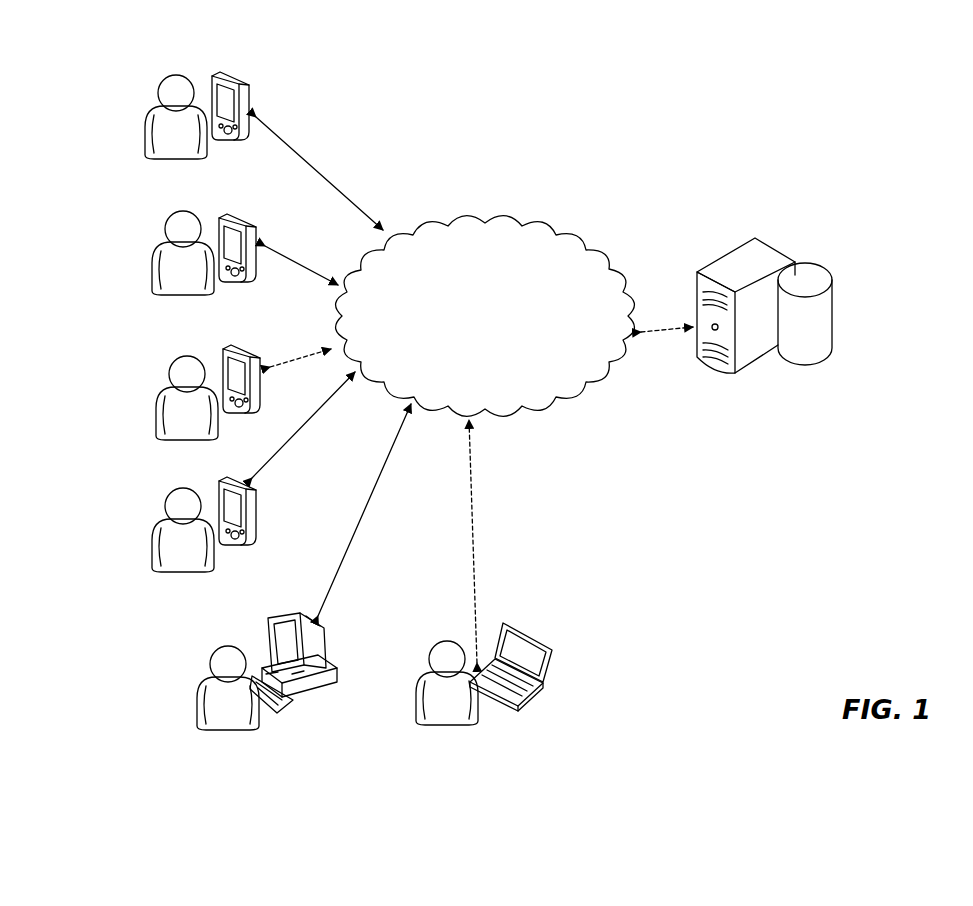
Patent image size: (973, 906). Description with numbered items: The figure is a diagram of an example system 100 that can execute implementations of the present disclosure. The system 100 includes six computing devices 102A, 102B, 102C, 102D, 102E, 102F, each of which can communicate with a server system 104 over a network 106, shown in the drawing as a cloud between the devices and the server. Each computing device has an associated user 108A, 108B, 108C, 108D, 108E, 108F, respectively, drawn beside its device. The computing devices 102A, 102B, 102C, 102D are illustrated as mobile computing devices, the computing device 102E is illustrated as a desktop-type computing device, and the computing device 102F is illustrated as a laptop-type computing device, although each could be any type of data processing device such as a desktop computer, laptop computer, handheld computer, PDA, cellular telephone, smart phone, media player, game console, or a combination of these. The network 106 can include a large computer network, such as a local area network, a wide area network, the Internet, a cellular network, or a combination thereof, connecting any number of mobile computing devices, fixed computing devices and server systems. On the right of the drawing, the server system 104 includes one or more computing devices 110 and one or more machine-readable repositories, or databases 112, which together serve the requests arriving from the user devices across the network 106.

The system 100 is at (631, 57).
The computing device 102A is at (241, 72).
The computing device 102B is at (248, 215).
The computing device 102C is at (246, 347).
The computing device 102D is at (262, 510).
The computing device 102E is at (332, 655).
The computing device 102F is at (557, 652).
The server system 104 is at (780, 330).
The network 106 is at (460, 216).
The user 108A is at (170, 158).
The user 108B is at (176, 295).
The user 108C is at (180, 440).
The user 108D is at (178, 572).
The user 108E is at (220, 730).
The user 108F is at (438, 725).
The computing device 110 is at (783, 250).
The database 112 is at (832, 280).